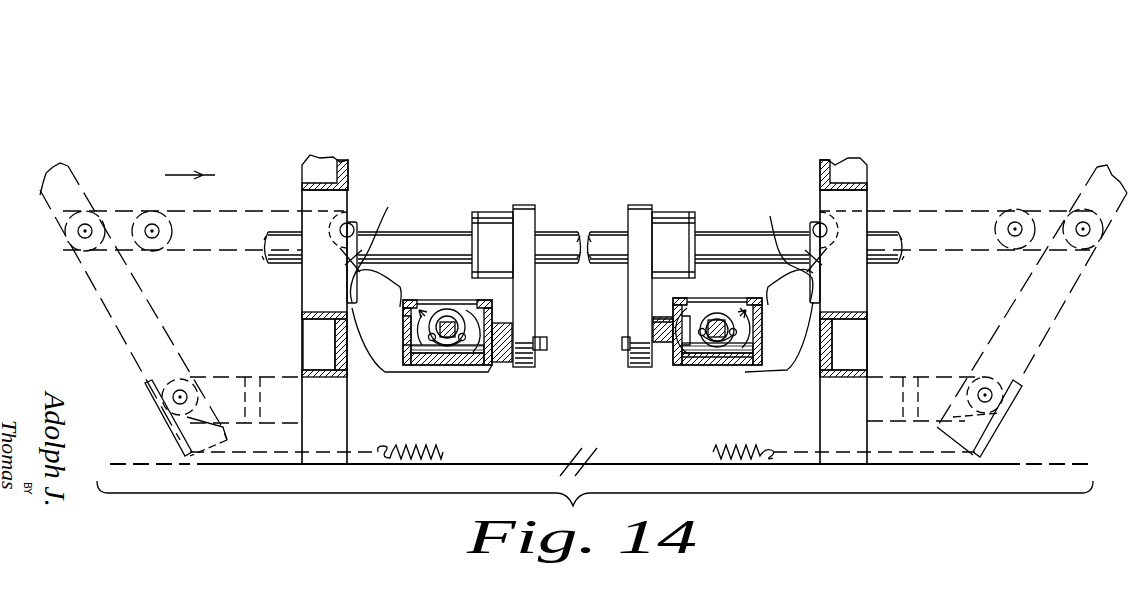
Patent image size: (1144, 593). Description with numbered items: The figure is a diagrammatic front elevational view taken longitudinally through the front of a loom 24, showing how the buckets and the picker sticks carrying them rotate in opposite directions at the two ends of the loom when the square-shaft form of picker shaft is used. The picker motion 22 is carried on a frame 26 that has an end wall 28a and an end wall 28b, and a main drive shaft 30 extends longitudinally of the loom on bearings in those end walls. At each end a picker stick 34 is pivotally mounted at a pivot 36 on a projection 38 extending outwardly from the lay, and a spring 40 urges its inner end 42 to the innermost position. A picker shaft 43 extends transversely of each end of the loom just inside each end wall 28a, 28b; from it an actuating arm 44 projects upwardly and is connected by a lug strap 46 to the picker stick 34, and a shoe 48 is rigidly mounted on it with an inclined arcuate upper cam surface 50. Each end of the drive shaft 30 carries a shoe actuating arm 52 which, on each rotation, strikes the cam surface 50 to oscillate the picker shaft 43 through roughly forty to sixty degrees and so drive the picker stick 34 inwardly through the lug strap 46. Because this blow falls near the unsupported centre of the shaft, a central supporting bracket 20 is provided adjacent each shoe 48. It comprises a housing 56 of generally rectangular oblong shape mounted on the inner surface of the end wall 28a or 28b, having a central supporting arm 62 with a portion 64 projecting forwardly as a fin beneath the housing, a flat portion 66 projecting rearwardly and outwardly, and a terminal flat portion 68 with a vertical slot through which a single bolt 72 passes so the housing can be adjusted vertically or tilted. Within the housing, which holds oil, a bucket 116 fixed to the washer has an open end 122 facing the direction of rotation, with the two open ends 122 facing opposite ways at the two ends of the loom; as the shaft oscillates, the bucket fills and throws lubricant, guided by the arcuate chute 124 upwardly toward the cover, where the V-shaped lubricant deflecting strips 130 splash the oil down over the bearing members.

The central supporting bracket 20 is at (462, 365).
The picker motion 22 is at (152, 308).
The loom 24 is at (772, 183).
The frame 26 is at (302, 185).
The end wall 28a is at (302, 320).
The end wall 28b is at (868, 317).
The main drive shaft 30 is at (428, 237).
The picker stick 34 is at (100, 303).
The pivot 36 is at (187, 390).
The projection 38 is at (232, 374).
The spring 40 is at (436, 440).
The inner end 42 is at (197, 437).
The picker shaft 43 is at (445, 342).
The actuating arm 44 is at (400, 305).
The lug strap 46 is at (237, 212).
The shoe 48 is at (502, 367).
The upper cam surface 50 is at (512, 328).
The shoe actuating arm 52 is at (527, 220).
The housing 56 is at (405, 353).
The central supporting arm 62 is at (302, 301).
The fin portion 64 is at (697, 365).
The flat portion 66 is at (392, 248).
The flat portion 68 is at (581, 246).
The bolt 72 is at (581, 257).
The bucket 116 is at (452, 308).
The open end 122 is at (452, 337).
The arcuate chute 124 is at (412, 352).
The lubricant deflecting strips 130 is at (452, 308).